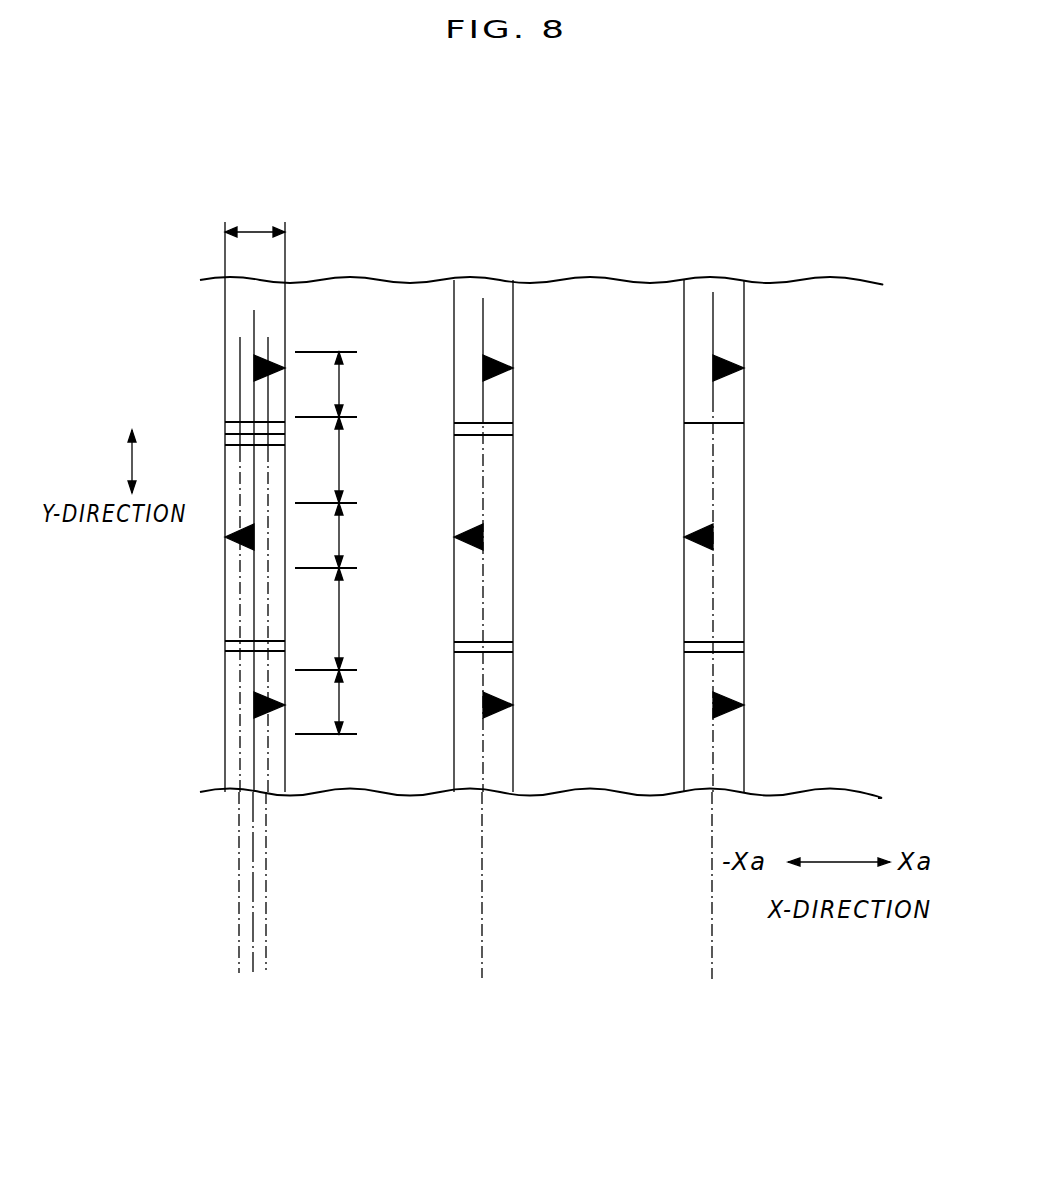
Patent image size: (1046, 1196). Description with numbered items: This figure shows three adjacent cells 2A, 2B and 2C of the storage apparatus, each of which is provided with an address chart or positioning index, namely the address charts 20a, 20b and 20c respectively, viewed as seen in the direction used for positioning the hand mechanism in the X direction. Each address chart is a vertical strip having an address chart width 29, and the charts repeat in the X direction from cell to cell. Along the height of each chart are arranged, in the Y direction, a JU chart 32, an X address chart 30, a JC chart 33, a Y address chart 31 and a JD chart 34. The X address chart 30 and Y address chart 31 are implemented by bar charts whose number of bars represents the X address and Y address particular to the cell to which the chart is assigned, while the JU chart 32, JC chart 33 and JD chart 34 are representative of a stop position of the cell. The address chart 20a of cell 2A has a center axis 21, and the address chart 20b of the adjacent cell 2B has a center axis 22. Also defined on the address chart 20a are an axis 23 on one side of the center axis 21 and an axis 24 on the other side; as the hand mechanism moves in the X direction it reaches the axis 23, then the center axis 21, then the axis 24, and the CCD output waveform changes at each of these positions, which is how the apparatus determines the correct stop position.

The address chart 20a is at (273, 300).
The address chart 20b is at (497, 288).
The address chart 20c is at (733, 305).
The cell 2A is at (330, 322).
The cell 2B is at (622, 318).
The cell 2C is at (826, 310).
The address chart width 29 is at (243, 228).
The X address chart 30 is at (340, 460).
The Y address chart 31 is at (340, 620).
The JU chart 32 is at (340, 385).
The JC chart 33 is at (340, 536).
The JD chart 34 is at (340, 703).
The center axis 21 is at (253, 968).
The center axis 22 is at (482, 958).
The axis 23 is at (237, 953).
The axis 24 is at (266, 945).